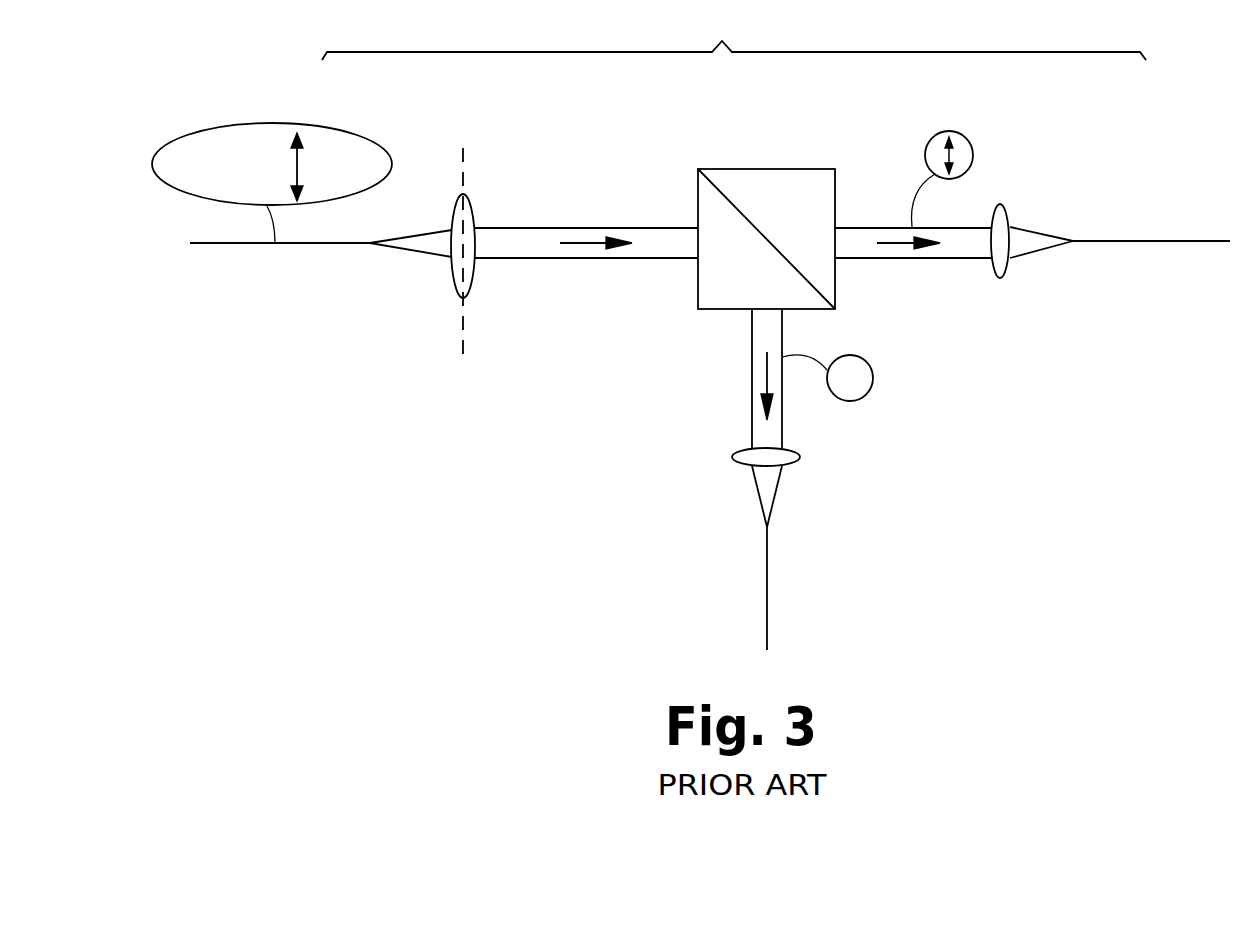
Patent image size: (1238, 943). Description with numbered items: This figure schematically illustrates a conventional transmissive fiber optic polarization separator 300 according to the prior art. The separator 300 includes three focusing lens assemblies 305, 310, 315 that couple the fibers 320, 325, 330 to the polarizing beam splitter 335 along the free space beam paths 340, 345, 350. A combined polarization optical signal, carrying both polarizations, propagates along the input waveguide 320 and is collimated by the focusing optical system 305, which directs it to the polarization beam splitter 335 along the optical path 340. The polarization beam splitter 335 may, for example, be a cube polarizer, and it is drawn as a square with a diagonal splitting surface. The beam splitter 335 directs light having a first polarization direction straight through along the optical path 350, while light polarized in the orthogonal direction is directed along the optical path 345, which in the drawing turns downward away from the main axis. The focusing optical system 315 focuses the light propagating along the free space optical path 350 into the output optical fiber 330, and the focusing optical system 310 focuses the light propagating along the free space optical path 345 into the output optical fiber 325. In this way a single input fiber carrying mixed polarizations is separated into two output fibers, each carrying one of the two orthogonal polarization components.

The separator 300 is at (734, 34).
The focusing optical system 305 is at (470, 200).
The focusing optical system 310 is at (785, 462).
The focusing optical system 315 is at (1023, 193).
The waveguide 320 is at (290, 243).
The output optical fiber 325 is at (766, 573).
The output optical fiber 330 is at (1140, 240).
The polarizing beam splitter 335 is at (762, 169).
The optical path 340 is at (580, 227).
The optical path 345 is at (752, 386).
The optical path 350 is at (937, 258).